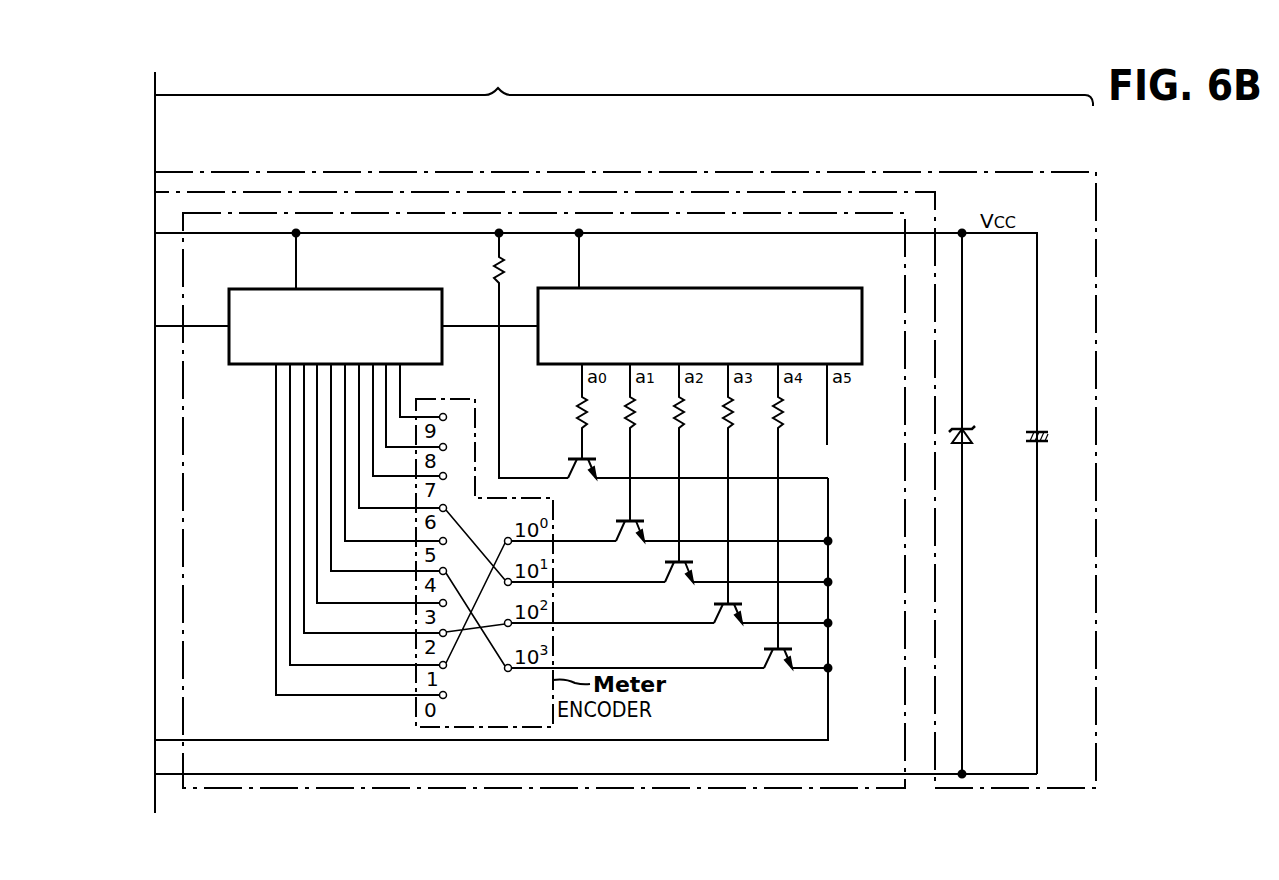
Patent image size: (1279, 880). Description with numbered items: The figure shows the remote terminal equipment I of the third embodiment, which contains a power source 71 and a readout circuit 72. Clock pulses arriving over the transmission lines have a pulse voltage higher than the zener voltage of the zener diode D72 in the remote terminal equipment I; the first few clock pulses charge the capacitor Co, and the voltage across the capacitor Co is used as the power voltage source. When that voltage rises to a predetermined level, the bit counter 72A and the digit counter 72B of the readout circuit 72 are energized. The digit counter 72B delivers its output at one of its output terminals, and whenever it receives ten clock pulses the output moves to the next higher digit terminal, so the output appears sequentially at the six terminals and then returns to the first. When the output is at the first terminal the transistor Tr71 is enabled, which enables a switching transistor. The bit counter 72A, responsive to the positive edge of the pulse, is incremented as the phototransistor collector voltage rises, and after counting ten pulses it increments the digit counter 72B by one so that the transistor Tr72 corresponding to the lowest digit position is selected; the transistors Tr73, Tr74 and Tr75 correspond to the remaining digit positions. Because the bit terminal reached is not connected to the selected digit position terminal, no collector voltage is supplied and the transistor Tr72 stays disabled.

The remote terminal equipment I is at (624, 84).
The power source 71 is at (1096, 337).
The readout circuit 72 is at (828, 790).
The bit counter 72A is at (241, 366).
The digit counter 72B is at (548, 366).
The transistor Tr71 is at (579, 467).
The transistor Tr72 is at (633, 527).
The transistor Tr73 is at (677, 568).
The transistor Tr74 is at (725, 612).
The transistor Tr75 is at (780, 658).
The zener diode D72 is at (974, 438).
The capacitor Co is at (1033, 444).